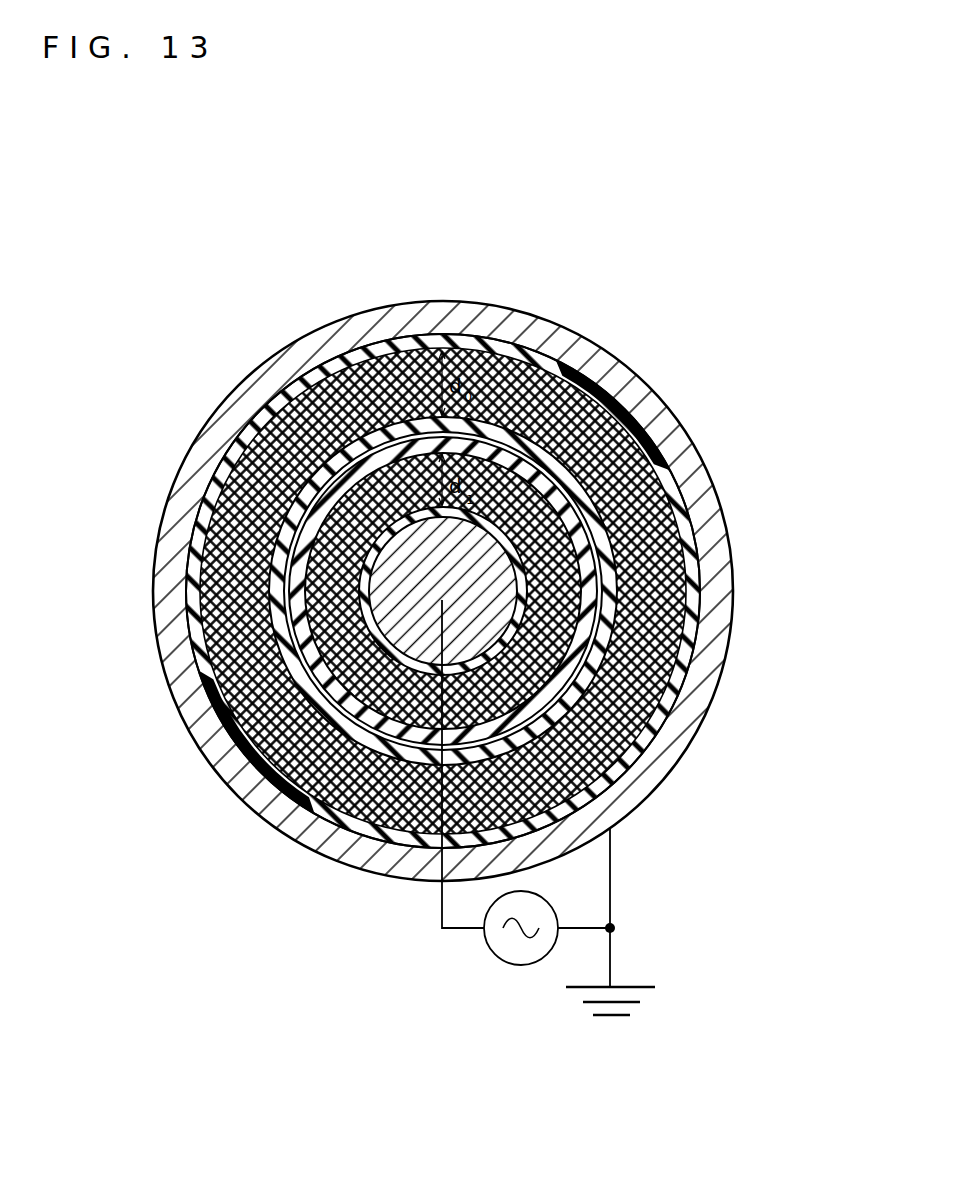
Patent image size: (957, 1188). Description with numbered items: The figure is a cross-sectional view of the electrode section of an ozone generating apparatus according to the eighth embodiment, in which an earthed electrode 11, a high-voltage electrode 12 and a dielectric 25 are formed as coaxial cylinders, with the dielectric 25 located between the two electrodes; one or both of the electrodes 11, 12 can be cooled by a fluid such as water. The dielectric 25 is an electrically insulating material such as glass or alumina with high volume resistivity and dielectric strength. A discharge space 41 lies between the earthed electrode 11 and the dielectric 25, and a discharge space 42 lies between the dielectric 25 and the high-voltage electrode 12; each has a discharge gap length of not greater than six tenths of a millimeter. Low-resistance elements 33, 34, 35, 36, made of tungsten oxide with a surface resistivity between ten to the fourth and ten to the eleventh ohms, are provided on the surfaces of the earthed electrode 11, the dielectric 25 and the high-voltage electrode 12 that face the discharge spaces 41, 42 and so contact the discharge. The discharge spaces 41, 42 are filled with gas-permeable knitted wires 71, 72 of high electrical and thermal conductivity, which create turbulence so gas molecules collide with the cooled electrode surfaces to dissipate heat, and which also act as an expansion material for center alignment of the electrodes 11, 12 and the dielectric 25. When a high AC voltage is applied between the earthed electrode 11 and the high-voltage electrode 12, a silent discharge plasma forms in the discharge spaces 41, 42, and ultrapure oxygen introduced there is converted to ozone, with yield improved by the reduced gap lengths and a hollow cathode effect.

The earthed electrode 11 is at (443, 300).
The high-voltage electrode 12 is at (583, 492).
The dielectric 25 is at (305, 665).
The low-resistance element 33 is at (193, 582).
The low-resistance element 34 is at (330, 370).
The low-resistance element 35 is at (250, 425).
The low-resistance element 36 is at (517, 630).
The discharge space 41 is at (662, 402).
The knitted wire 71 is at (618, 383).
The discharge space 42 is at (191, 747).
The knitted wire 72 is at (230, 742).